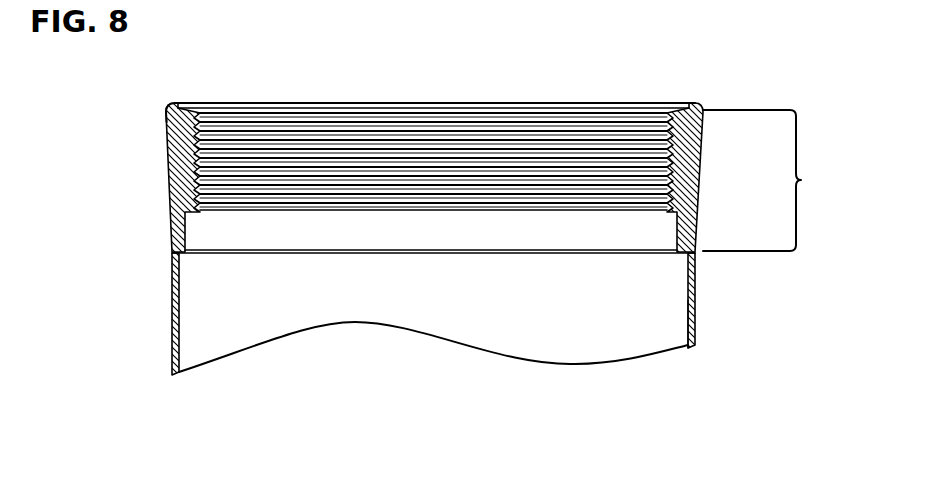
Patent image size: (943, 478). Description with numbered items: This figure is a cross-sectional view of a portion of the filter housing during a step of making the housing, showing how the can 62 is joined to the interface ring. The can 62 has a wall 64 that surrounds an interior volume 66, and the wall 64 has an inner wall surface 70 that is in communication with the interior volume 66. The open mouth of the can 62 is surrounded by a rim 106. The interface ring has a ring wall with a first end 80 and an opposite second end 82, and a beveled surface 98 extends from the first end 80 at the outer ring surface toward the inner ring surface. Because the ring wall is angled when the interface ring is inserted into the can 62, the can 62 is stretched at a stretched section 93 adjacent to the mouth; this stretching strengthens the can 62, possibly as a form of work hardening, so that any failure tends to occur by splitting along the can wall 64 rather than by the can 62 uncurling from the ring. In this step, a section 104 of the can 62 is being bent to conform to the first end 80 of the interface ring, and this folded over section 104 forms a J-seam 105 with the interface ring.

The can 62 is at (171, 305).
The wall 64 is at (171, 359).
The interior volume 66 is at (688, 343).
The inner wall surface 70 is at (686, 296).
The first end 80 is at (695, 105).
The second end 82 is at (693, 253).
The stretched section 93 is at (769, 180).
The beveled surface 98 is at (672, 122).
The section 104 is at (177, 102).
The J-seam 105 is at (193, 111).
The rim 106 is at (255, 103).